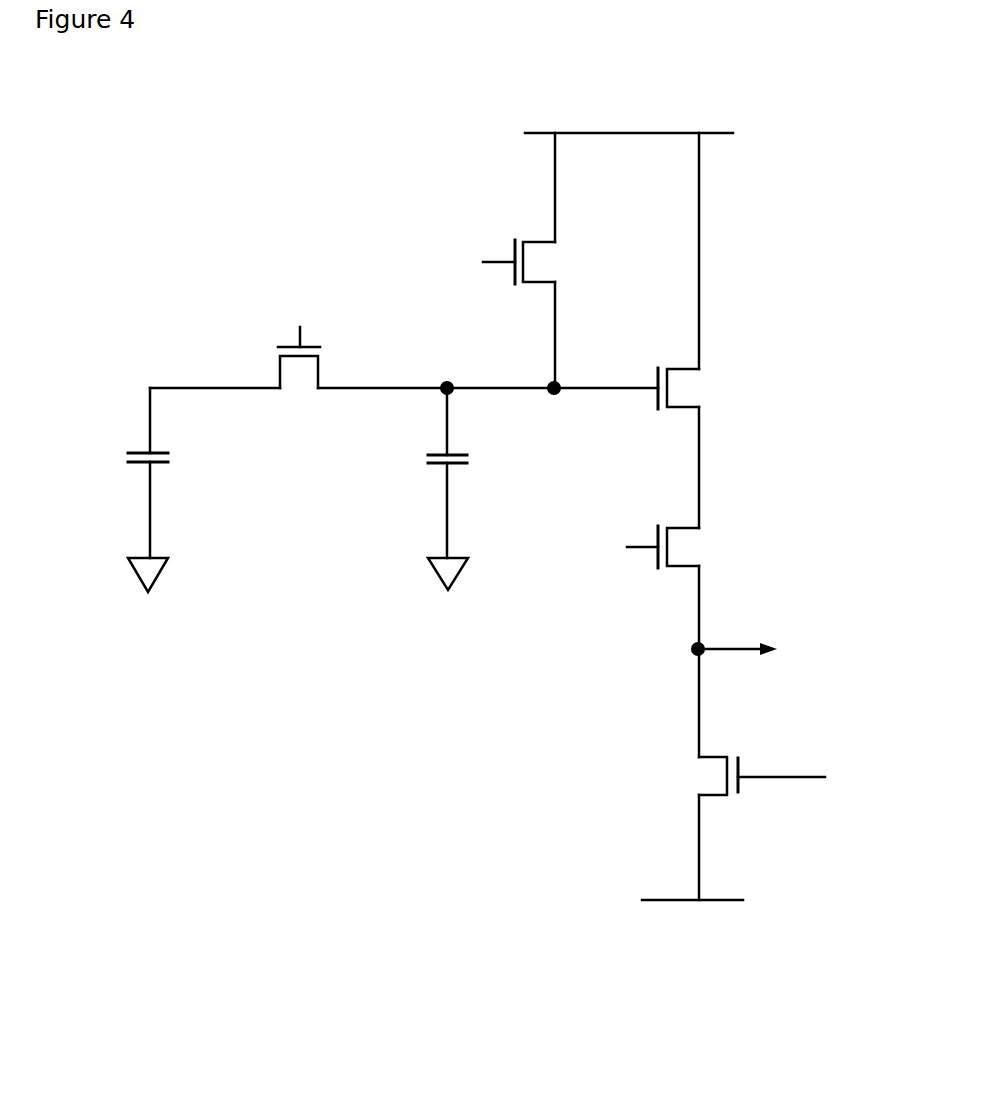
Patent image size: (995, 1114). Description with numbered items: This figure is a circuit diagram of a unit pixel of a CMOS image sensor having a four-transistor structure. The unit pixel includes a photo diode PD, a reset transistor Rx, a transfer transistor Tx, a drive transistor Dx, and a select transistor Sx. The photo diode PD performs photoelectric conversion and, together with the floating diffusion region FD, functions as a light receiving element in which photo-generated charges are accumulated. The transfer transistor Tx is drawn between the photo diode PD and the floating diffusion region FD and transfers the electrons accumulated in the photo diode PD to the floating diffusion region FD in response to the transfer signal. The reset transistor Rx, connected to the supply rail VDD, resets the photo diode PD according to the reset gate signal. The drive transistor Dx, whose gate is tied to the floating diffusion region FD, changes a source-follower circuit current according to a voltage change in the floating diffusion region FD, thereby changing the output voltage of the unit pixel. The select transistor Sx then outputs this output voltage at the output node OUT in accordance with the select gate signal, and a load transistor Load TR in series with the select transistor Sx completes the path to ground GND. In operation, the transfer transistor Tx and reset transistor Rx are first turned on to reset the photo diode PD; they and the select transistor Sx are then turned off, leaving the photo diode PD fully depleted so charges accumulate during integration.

The power supply voltage VDD is at (675, 124).
The reset transistor Rx is at (482, 264).
The transfer transistor Tx is at (300, 322).
The drive transistor Dx is at (710, 391).
The select transistor Sx is at (620, 547).
The photo diode PD is at (120, 490).
The floating diffusion region FD is at (420, 489).
The output terminal OUT is at (784, 649).
The load transistor Load TR is at (685, 770).
The ground GND is at (692, 932).